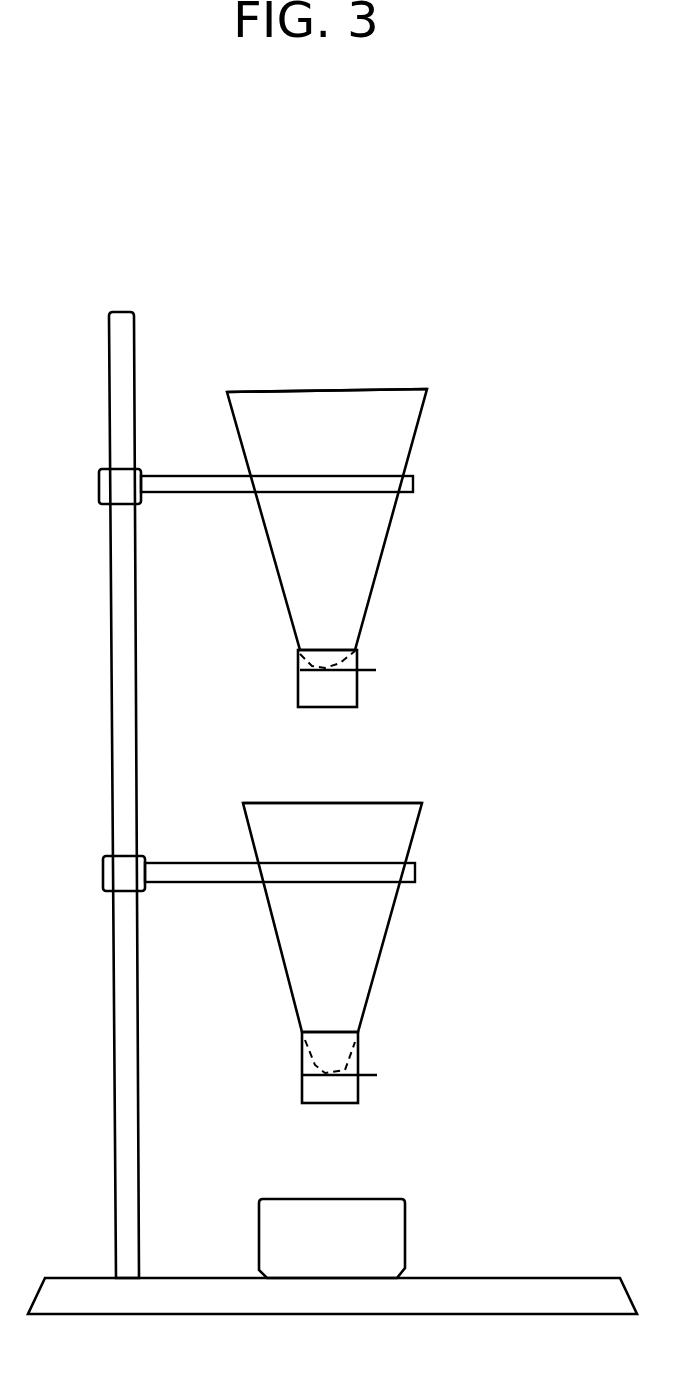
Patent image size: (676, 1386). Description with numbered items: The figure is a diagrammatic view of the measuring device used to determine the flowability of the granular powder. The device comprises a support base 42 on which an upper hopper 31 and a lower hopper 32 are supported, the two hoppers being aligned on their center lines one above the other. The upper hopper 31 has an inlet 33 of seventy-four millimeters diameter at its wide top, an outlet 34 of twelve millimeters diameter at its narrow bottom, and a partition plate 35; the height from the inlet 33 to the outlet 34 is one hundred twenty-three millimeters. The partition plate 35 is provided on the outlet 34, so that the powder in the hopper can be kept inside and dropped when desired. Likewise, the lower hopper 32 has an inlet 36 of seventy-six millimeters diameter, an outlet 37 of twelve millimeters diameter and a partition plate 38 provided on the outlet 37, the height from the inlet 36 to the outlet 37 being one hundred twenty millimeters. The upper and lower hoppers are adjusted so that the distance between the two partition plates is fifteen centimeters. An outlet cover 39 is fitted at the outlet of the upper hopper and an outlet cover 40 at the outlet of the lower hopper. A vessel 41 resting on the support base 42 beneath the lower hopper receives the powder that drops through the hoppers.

The upper hopper 31 is at (392, 545).
The lower hopper 32 is at (392, 923).
The inlet 33 is at (380, 390).
The outlet 34 is at (355, 651).
The partition plate 35 is at (368, 677).
The inlet 36 is at (375, 803).
The outlet 37 is at (355, 1045).
The partition plate 38 is at (370, 1082).
The outlet cover 39 is at (298, 684).
The outlet cover 40 is at (302, 1073).
The vessel 41 is at (405, 1237).
The support base 42 is at (172, 1272).